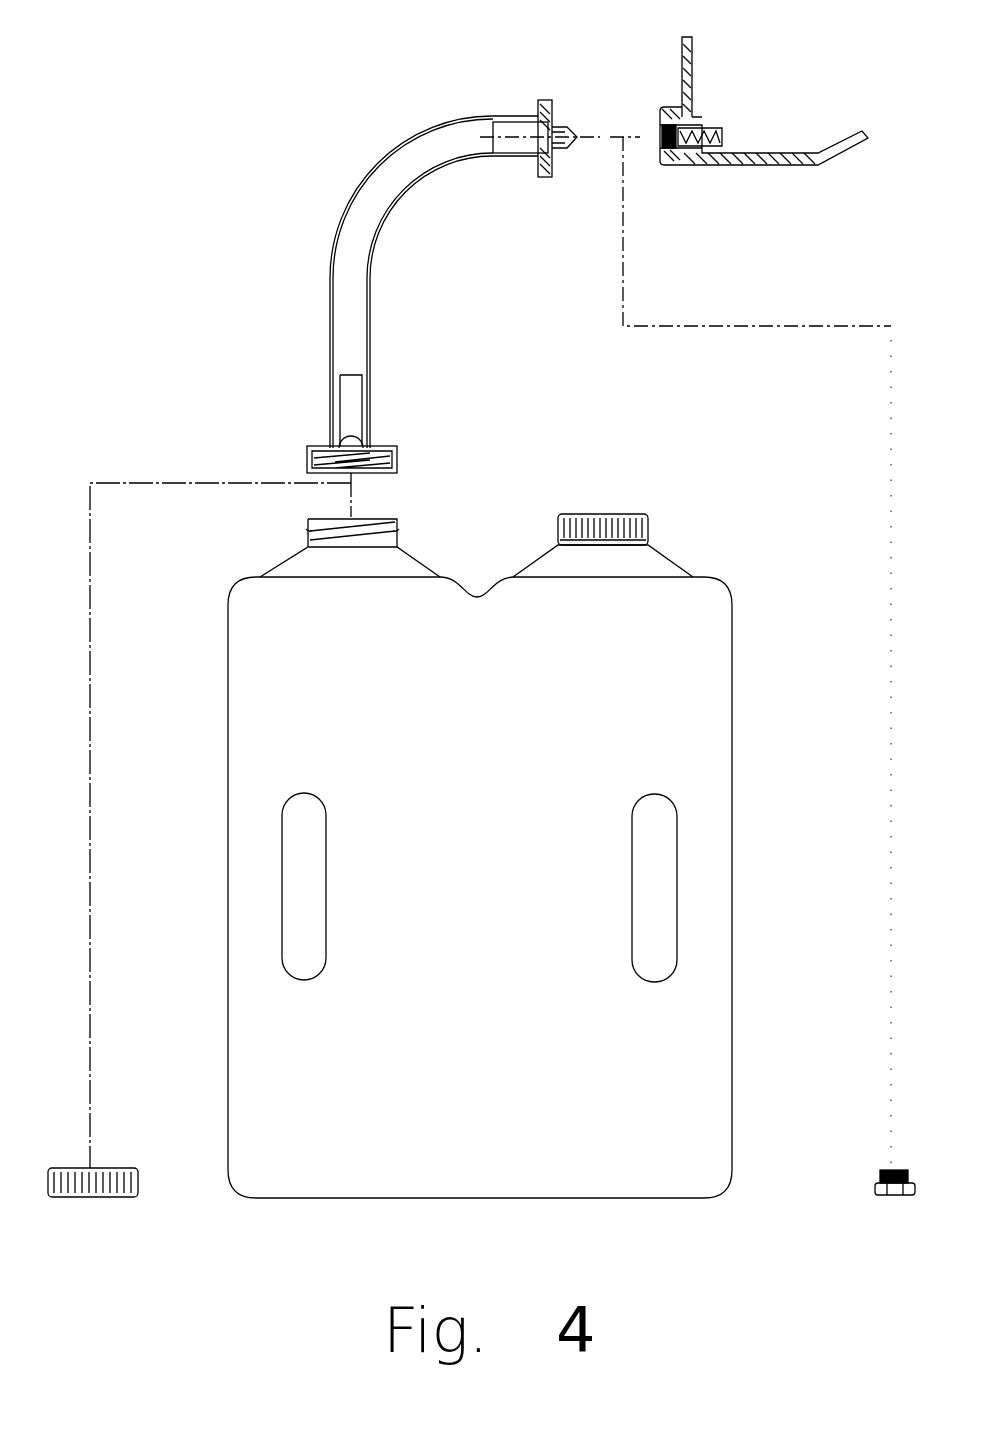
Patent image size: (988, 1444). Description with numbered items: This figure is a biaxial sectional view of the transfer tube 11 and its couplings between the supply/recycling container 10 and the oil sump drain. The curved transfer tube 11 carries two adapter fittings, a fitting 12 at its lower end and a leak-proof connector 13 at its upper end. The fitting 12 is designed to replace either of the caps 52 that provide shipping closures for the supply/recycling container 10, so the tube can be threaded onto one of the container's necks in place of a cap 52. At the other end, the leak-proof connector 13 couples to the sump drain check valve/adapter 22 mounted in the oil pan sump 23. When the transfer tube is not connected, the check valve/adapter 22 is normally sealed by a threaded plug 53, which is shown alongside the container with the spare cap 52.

The supply/recycling container 10 is at (732, 765).
The transfer tube 11 is at (338, 228).
The adapter fitting 12 is at (305, 445).
The leak-proof connector 13 is at (540, 100).
The check valve/adapter 22 is at (676, 168).
The oil pan sump 23 is at (693, 82).
The cap 52 is at (585, 515).
The threaded plug 53 is at (861, 1246).